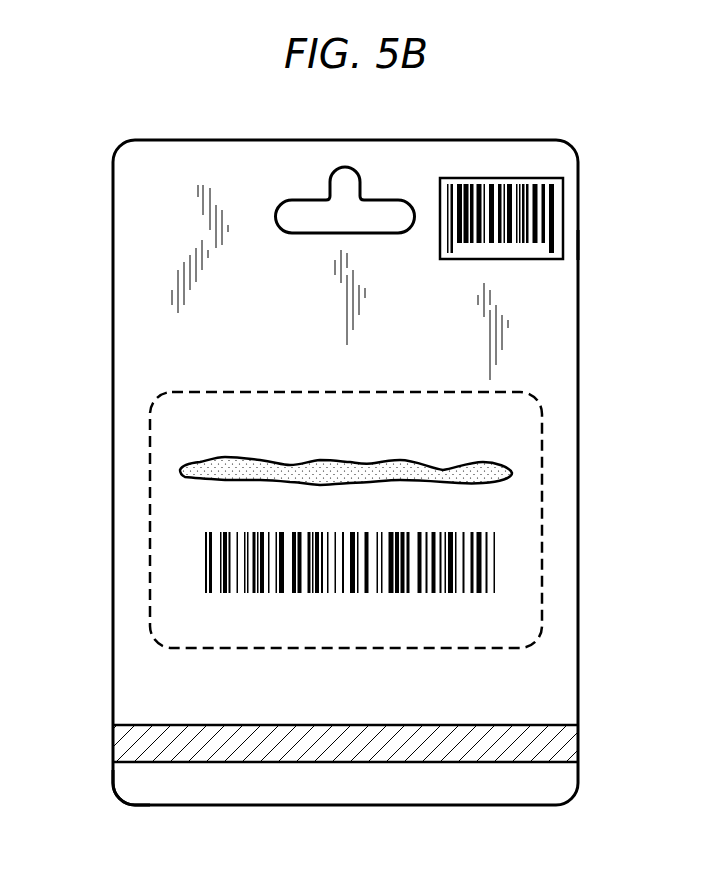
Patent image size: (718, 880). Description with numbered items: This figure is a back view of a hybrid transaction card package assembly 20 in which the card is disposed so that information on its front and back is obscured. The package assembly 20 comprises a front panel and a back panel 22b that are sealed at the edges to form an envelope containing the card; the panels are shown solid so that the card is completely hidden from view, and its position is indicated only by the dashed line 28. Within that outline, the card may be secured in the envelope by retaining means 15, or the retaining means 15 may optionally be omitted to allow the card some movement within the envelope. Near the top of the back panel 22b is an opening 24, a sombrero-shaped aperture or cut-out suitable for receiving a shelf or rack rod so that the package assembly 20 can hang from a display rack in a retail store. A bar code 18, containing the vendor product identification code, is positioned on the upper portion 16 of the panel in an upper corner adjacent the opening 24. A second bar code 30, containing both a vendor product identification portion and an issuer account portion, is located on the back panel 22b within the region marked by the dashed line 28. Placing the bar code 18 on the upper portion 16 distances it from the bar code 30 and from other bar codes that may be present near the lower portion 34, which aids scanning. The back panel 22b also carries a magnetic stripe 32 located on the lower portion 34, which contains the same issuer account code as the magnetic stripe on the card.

The hybrid transaction card package assembly 20 is at (231, 116).
The upper portion 16 is at (578, 243).
The back panel 22b is at (545, 370).
The opening 24 is at (348, 182).
The bar code 18 is at (498, 178).
The dashed line 28 is at (540, 478).
The retaining means 15 is at (418, 460).
The bar code 30 is at (205, 552).
The magnetic stripe 32 is at (578, 733).
The lower portion 34 is at (115, 793).